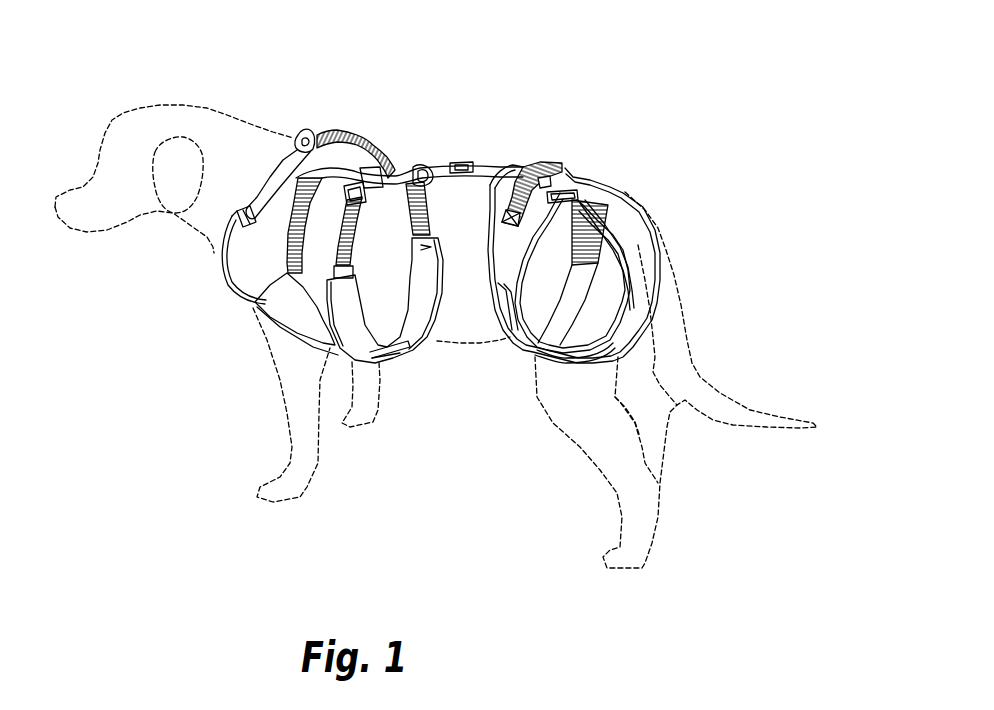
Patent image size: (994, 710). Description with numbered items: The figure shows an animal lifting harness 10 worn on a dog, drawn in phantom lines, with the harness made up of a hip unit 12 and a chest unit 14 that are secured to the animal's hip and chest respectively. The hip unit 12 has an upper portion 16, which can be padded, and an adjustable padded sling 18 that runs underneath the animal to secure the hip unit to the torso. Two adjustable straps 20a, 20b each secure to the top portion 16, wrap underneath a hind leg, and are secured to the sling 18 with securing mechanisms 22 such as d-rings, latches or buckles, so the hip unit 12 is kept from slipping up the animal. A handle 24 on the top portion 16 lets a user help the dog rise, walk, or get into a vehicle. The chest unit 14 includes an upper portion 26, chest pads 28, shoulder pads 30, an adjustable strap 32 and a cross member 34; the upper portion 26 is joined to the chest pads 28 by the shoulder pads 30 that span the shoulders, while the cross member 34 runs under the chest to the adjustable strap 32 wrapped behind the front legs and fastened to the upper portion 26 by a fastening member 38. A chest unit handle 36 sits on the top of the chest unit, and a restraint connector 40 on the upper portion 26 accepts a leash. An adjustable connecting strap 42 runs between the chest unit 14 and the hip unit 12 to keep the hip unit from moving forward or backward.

The lifting harness 10 is at (453, 302).
The hip unit 12 is at (633, 232).
The chest unit 14 is at (325, 243).
The upper portion of the hip unit 16 is at (528, 220).
The adjustable padded sling 18 is at (533, 347).
The adjustable strap 20a is at (657, 228).
The adjustable strap 20b is at (630, 303).
The securing mechanism 22 is at (613, 192).
The handle 24 is at (563, 167).
The upper portion of the chest unit 26 is at (349, 164).
The chest pads 28 is at (233, 288).
The shoulder pads 30 is at (255, 208).
The adjustable strap 32 is at (402, 362).
The cross member 34 is at (293, 322).
The chest unit handle 36 is at (335, 130).
The fastening member 38 is at (400, 172).
The restraint connector 40 is at (297, 123).
The connecting strap 42 is at (500, 165).